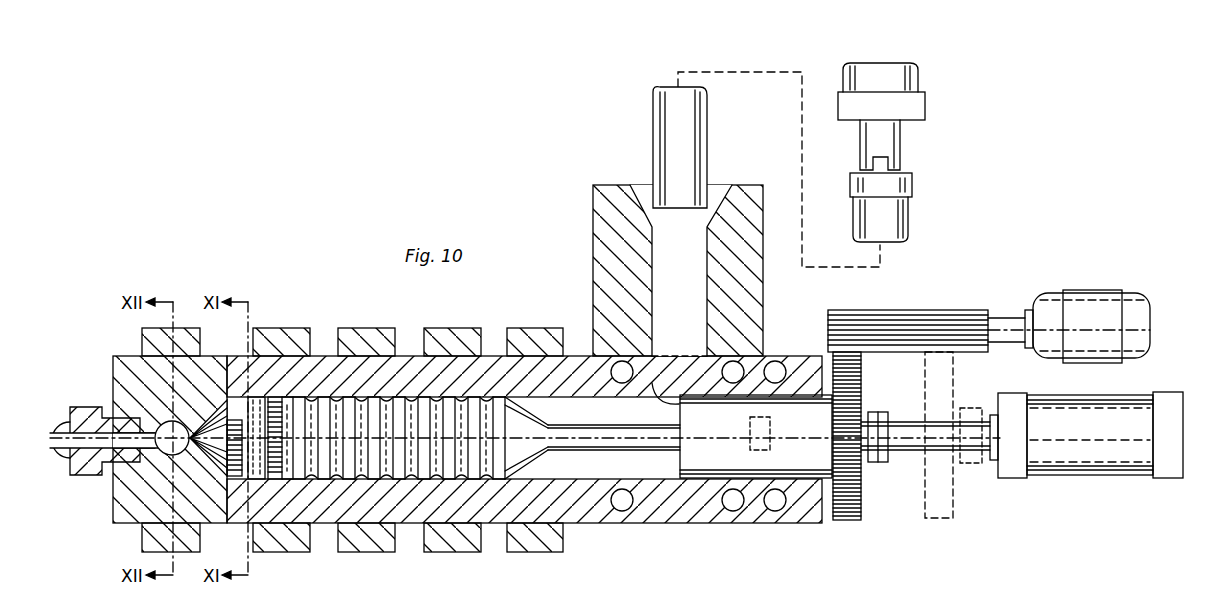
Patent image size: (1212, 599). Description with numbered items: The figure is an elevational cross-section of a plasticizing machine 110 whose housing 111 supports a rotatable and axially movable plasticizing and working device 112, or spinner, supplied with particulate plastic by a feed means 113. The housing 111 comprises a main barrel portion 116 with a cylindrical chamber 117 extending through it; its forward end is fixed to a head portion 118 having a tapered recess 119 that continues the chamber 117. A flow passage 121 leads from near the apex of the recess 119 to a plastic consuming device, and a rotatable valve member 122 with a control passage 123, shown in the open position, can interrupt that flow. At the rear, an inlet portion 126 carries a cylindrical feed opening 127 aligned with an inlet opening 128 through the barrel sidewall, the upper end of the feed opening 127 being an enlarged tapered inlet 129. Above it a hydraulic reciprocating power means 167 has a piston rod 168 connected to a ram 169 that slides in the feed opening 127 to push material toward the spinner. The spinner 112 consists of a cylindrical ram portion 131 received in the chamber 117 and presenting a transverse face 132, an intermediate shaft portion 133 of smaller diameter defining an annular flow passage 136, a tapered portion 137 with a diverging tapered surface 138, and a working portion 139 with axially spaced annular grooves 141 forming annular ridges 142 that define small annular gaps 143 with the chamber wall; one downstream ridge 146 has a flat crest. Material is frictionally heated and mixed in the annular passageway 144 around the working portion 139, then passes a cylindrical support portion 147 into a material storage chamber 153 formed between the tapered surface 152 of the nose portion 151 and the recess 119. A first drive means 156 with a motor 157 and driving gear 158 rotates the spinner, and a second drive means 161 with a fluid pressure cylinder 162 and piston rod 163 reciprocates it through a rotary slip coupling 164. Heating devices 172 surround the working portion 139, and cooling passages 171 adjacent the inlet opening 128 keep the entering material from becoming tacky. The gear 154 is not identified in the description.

The plasticizing machine 110 is at (303, 244).
The housing 111 is at (624, 528).
The plasticizing and working device 112 is at (330, 488).
The feed means 113 is at (722, 147).
The barrel portion 116 is at (750, 510).
The cylindrical chamber 117 is at (593, 481).
The head portion 118 is at (120, 502).
The tapered recess 119 is at (204, 432).
The flow passage 121 is at (73, 440).
The valve member 122 is at (118, 420).
The control passage 123 is at (170, 457).
The inlet portion 126 is at (767, 223).
The cylindrical feed opening 127 is at (655, 283).
The cylindrical inlet opening 128 is at (706, 352).
The enlarged tapered inlet 129 is at (643, 183).
The ram portion 131 is at (808, 468).
The transverse face 132 is at (680, 463).
The intermediate shaft portion 133 is at (643, 441).
The annular flow passage 136 is at (583, 407).
The tapered portion 137 is at (525, 450).
The tapered surface 138 is at (518, 410).
The working portion 139 is at (347, 437).
The annular grooves 141 is at (400, 480).
The annular ridges 142 is at (462, 397).
The annular gaps 143 is at (425, 377).
The annular passageway 144 is at (460, 523).
The flat-crested ridge 146 is at (275, 477).
The cylindrical support portion 147 is at (247, 403).
The nose portion 151 is at (213, 470).
The tapered surface 152 is at (192, 466).
The material storage chamber 153 is at (225, 403).
The drive gear 154 is at (857, 392).
The first drive means 156 is at (1144, 280).
The motor 157 is at (1097, 305).
The driving gear 158 is at (932, 312).
The second drive means 161 is at (1091, 499).
The fluid pressure cylinder 162 is at (1132, 407).
The piston rod 163 is at (985, 466).
The rotary slip coupling 164 is at (877, 461).
The reciprocating power means 167 is at (908, 82).
The piston rod 168 is at (898, 143).
The ram 169 is at (660, 145).
The cooling passages 171 is at (610, 365).
The heating devices 172 is at (294, 328).